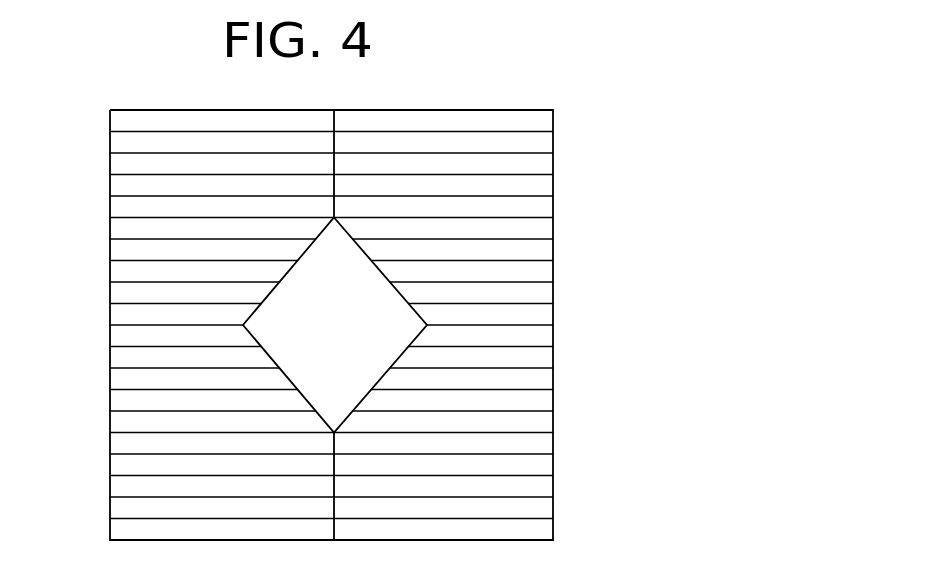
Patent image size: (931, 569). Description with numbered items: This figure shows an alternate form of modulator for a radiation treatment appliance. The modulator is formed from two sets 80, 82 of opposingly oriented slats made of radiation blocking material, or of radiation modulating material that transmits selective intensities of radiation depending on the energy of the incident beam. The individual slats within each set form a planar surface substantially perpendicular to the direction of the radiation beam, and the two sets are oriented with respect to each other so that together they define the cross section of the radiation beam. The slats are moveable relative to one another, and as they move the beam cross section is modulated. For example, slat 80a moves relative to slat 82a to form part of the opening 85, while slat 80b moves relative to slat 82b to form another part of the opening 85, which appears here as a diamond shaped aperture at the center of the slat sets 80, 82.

The second set of slats 82 is at (223, 109).
The slat 82a is at (109, 270).
The slat 82b is at (109, 353).
The first set of slats 80 is at (462, 110).
The slat 80a is at (534, 272).
The slat 80b is at (538, 338).
The opening 85 is at (350, 373).